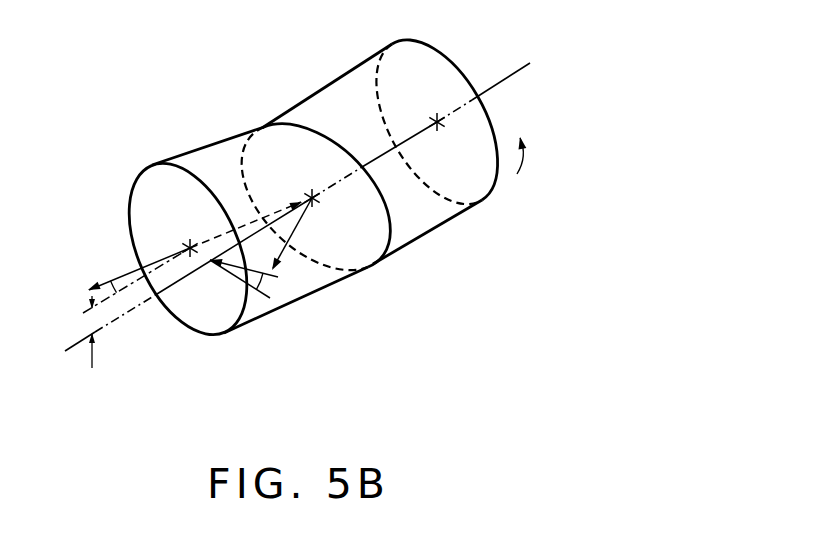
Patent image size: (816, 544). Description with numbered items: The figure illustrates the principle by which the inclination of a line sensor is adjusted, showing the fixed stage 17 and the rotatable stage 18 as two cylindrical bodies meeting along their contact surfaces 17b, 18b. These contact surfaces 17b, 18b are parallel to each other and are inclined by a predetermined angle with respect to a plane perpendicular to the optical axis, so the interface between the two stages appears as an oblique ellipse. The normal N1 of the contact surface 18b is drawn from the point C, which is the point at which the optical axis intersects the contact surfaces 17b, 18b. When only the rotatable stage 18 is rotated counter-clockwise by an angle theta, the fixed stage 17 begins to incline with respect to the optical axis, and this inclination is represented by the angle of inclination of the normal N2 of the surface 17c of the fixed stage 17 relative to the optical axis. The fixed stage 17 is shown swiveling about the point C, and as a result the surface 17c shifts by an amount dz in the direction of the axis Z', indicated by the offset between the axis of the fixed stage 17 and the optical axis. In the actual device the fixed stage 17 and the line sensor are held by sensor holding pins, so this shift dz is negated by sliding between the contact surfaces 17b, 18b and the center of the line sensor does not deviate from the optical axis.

The fixed stage 17 is at (220, 162).
The rotatable stage 18 is at (338, 98).
The surface of the fixed stage 17c is at (157, 190).
The contact surface of the fixed stage 17b is at (390, 225).
The contact surface of the rotatable stage 18b is at (381, 199).
The swivel point C is at (311, 197).
The normal of the contact surface 18b N1 is at (302, 224).
The normal of the surface 17c N2 is at (123, 275).
The amount of shift dz is at (135, 325).